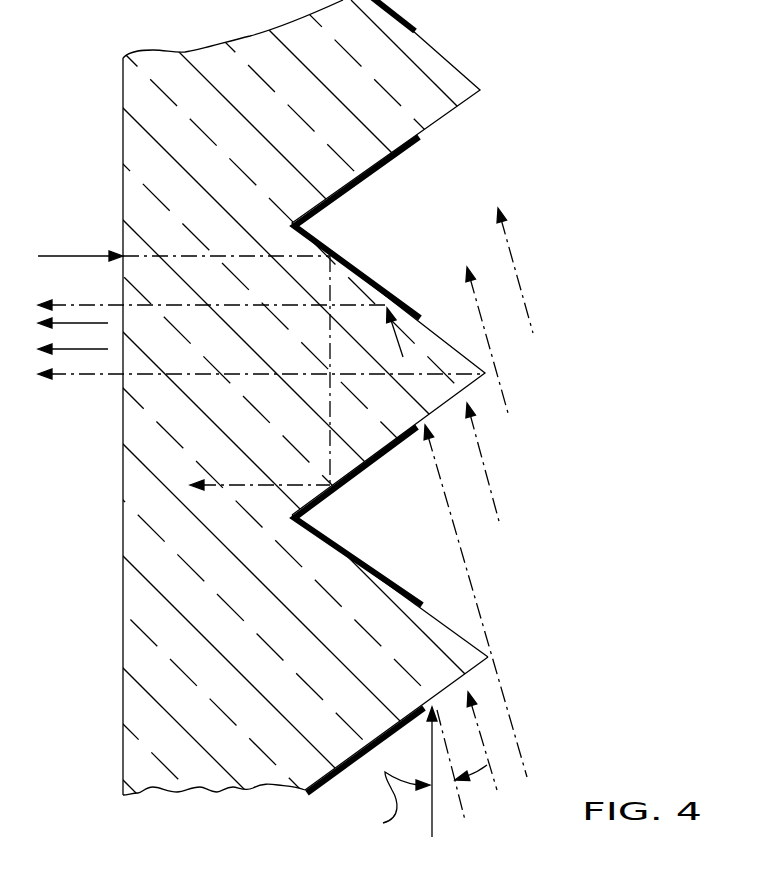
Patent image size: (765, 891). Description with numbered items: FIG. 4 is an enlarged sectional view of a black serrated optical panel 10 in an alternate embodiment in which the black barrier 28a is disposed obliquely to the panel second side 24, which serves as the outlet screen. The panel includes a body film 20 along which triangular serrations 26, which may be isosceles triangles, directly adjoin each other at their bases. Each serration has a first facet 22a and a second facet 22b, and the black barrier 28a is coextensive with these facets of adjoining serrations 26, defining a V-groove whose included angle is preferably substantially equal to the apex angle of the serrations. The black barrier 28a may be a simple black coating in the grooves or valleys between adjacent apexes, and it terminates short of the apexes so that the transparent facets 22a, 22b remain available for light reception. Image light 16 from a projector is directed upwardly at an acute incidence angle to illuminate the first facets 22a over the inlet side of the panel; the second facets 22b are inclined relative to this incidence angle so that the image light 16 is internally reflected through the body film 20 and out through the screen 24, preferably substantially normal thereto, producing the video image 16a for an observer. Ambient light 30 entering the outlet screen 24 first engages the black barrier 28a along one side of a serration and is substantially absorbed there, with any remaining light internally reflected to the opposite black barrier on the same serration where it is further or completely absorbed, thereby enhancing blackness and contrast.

The optical panel 10 is at (466, 172).
The body film 20 is at (200, 719).
The panel second side 24 is at (123, 694).
The serrations 26 is at (414, 674).
The first facets 22a is at (477, 667).
The second facets 22b is at (447, 622).
The black barrier 28a is at (365, 557).
The ambient light 30 is at (70, 255).
The video image 16a is at (103, 375).
The image light 16 is at (522, 757).